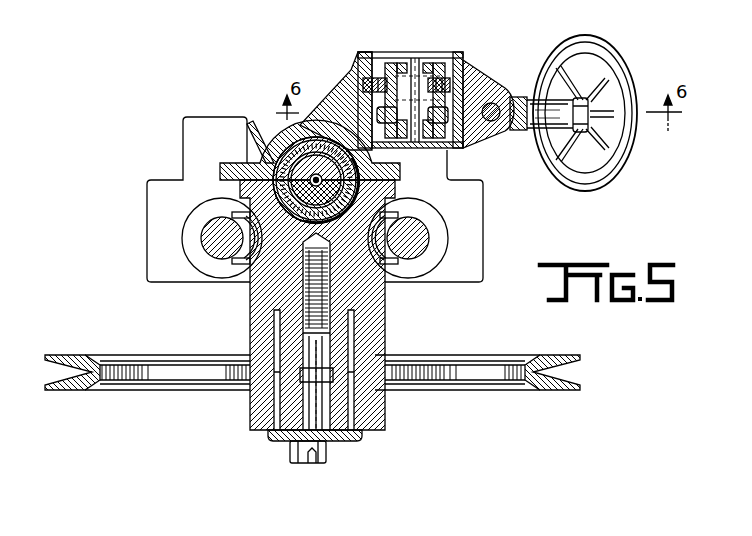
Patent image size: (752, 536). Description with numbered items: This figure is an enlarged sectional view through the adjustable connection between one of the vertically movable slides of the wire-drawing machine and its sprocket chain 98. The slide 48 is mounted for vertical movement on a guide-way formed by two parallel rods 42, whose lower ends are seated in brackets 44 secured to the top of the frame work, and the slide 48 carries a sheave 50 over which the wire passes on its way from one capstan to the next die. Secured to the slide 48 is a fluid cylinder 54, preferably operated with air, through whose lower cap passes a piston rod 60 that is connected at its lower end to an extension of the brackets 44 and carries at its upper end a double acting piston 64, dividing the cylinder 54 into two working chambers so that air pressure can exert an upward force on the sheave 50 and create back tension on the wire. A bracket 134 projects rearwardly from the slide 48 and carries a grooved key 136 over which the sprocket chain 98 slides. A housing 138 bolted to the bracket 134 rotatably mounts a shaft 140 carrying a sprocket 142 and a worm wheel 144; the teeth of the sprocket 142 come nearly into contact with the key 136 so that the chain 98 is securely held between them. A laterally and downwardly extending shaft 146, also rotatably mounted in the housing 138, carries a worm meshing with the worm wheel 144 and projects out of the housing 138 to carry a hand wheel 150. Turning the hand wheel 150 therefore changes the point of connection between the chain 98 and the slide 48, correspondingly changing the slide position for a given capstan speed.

The parallel rods 42 is at (222, 238).
The brackets 44 is at (163, 208).
The slide 48 is at (250, 290).
The sheave 50 is at (446, 358).
The fluid cylinder 54 is at (275, 150).
The piston rod 60 is at (317, 176).
The double acting piston 64 is at (283, 170).
The sprocket chain 98 is at (384, 80).
The bracket 134 is at (350, 74).
The grooved key 136 is at (358, 62).
The housing 138 is at (466, 72).
The shaft 140 is at (410, 68).
The sprocket 142 is at (432, 80).
The worm wheel 144 is at (436, 138).
The shaft 146 is at (488, 124).
The hand wheel 150 is at (612, 62).